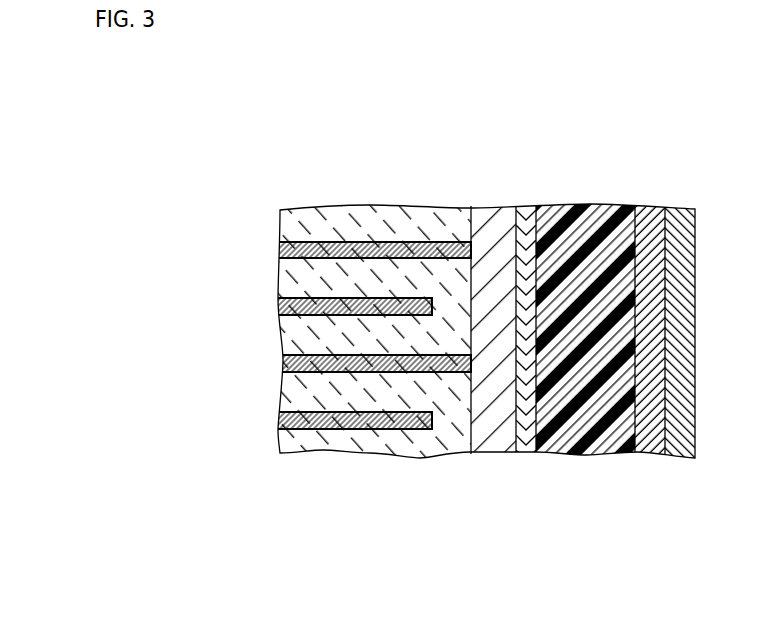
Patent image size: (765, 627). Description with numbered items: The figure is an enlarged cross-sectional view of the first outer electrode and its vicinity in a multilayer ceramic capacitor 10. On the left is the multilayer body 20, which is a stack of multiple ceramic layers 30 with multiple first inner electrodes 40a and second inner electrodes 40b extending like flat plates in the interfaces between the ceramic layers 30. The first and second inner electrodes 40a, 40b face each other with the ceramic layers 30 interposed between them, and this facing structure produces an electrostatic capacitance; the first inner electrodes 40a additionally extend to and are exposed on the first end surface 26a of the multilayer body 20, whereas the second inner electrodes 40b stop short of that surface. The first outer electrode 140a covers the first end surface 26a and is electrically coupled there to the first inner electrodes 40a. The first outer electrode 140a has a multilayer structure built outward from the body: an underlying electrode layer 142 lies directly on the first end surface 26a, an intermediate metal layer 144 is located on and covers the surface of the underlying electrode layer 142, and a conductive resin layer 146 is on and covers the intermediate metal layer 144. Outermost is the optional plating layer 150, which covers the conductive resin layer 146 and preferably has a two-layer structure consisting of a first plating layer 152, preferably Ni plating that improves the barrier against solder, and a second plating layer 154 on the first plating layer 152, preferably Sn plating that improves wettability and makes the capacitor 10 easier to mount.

The multilayer ceramic capacitor 10 is at (268, 139).
The multilayer body 20 is at (332, 457).
The first end surface 26a is at (470, 388).
The ceramic layers 30 is at (385, 270).
The first inner electrodes 40a is at (280, 248).
The second inner electrodes 40b is at (280, 305).
The first outer electrode 140a is at (582, 350).
The underlying electrode layer 142 is at (503, 440).
The intermediate metal layer 144 is at (530, 438).
The conductive resin layer 146 is at (570, 442).
The plating layer 150 is at (662, 380).
The first plating layer 152 is at (650, 435).
The second plating layer 154 is at (693, 355).